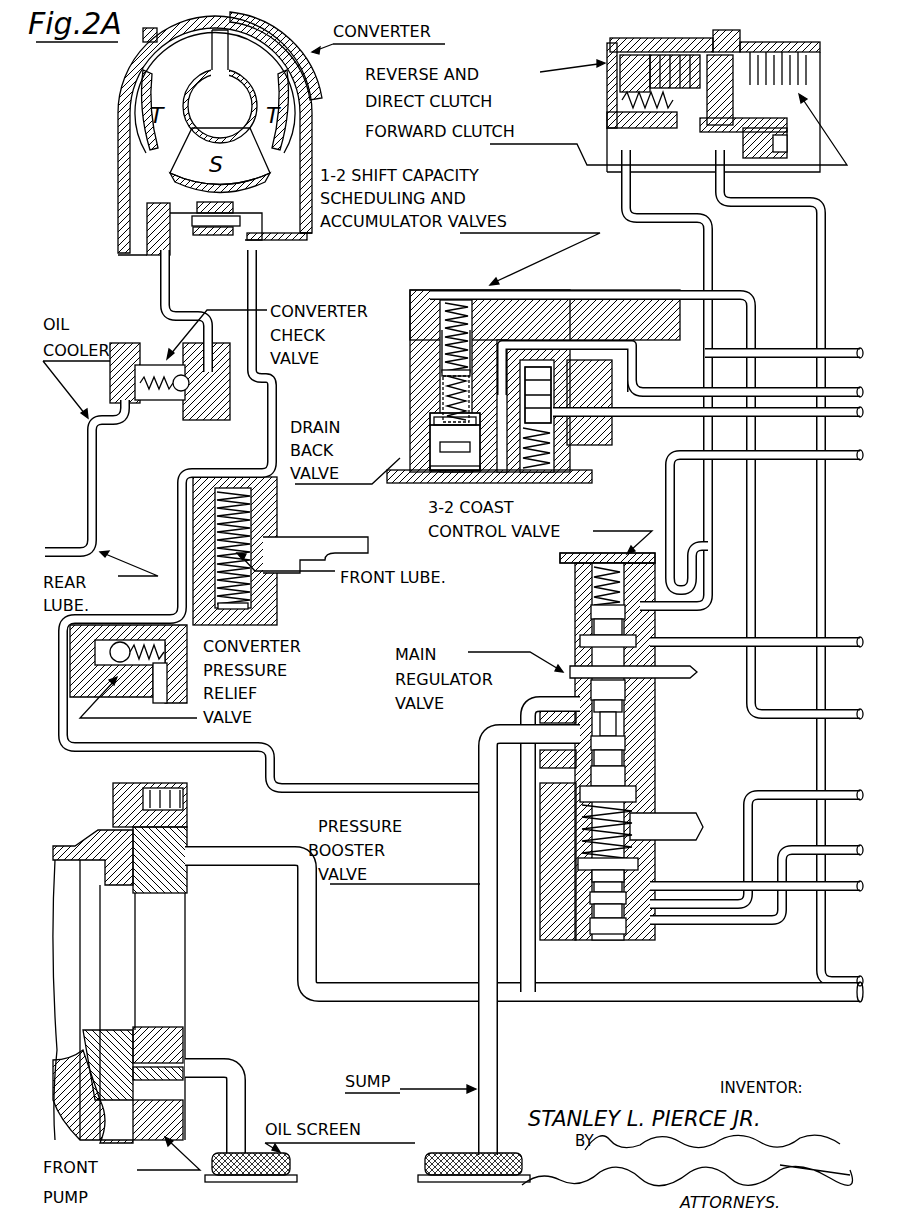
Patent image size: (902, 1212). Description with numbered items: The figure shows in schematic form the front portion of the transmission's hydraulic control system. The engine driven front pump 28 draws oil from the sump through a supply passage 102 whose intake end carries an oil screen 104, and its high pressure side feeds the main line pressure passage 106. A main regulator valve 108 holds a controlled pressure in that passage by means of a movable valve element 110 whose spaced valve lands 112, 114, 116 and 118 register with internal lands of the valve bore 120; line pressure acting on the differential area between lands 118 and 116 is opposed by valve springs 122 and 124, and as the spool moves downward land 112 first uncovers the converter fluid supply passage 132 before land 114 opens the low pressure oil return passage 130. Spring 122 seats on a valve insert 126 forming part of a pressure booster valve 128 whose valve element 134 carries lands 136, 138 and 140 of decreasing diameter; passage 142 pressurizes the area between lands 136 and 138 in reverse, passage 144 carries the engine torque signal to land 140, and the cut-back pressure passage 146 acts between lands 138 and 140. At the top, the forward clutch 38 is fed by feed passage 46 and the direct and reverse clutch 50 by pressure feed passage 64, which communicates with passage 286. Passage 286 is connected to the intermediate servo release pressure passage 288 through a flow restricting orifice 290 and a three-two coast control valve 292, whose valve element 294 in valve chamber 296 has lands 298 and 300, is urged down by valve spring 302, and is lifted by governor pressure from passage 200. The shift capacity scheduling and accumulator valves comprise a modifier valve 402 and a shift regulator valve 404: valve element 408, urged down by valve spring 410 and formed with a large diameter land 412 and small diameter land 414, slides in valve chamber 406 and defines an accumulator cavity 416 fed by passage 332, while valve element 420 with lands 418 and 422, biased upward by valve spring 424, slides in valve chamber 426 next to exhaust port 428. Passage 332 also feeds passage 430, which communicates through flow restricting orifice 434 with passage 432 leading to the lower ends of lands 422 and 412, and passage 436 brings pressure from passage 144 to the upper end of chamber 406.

The forward clutch 38 is at (842, 72).
The feed passage 46 is at (727, 193).
The pressure feed passage 64 is at (636, 199).
The direct and reverse clutch 50 is at (688, 196).
The passage 436 is at (665, 290).
The valve spring 410 is at (440, 303).
The small diameter land 414 is at (442, 340).
The valve element 408 is at (445, 372).
The modifier valve 402 is at (445, 392).
The accumulator cavity 416 is at (430, 425).
The valve chamber 406 is at (447, 405).
The large diameter land 412 is at (435, 455).
The valve element 420 is at (506, 368).
The valve land 418 is at (545, 340).
The passage 332 is at (630, 345).
The shift regulator valve 404 is at (648, 388).
The valve chamber 426 is at (660, 410).
The land 422 is at (553, 410).
The exhaust port 428 is at (615, 400).
The valve spring 424 is at (552, 452).
The passage 430 is at (440, 480).
The flow restricting orifice 434 is at (455, 482).
The passage 432 is at (560, 482).
The passage 286 is at (790, 353).
The intermediate servo release pressure passage 288 is at (704, 546).
The flow restricting orifice 290 is at (690, 580).
The valve spring 302 is at (562, 556).
The valve chamber 296 is at (594, 590).
The valve land 298 is at (592, 612).
The 3-2 coast control valve 292 is at (592, 632).
The valve element 294 is at (660, 626).
The valve land 300 is at (655, 666).
The governor pressure passage 200 is at (795, 642).
The valve land 118 is at (625, 690).
The valve land 116 is at (625, 707).
The valve bore 120 is at (622, 728).
The valve land 114 is at (625, 742).
The movable valve element 110 is at (625, 758).
The valve land 112 is at (625, 772).
The main regulator valve 108 is at (625, 792).
The valve spring 122 is at (662, 820).
The cut-back pressure passage 146 is at (800, 783).
The valve insert 126 is at (632, 848).
The valve spring 124 is at (632, 866).
The passage 144 is at (785, 850).
The passage 142 is at (808, 892).
The low pressure oil return passage 130 is at (478, 730).
The converter fluid supply passage 132 is at (445, 772).
The valve land 136 is at (575, 866).
The valve land 138 is at (580, 882).
The pressure booster valve 128 is at (582, 896).
The valve element 134 is at (585, 912).
The valve land 140 is at (580, 926).
The front pump 28 is at (190, 888).
The supply passage 102 is at (245, 1098).
The oil screen 104 is at (425, 1168).
The main line pressure passage 106 is at (832, 1003).